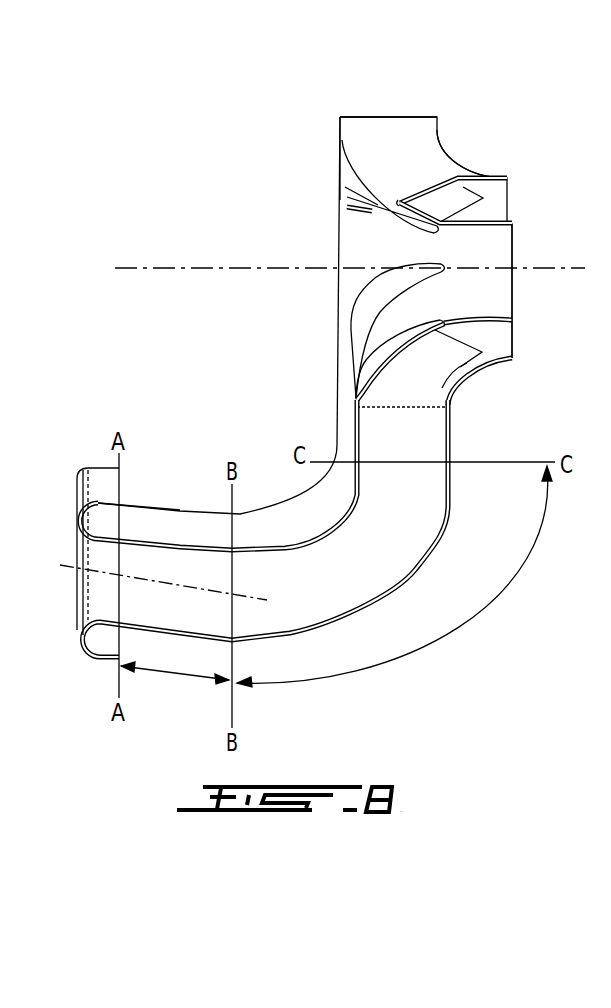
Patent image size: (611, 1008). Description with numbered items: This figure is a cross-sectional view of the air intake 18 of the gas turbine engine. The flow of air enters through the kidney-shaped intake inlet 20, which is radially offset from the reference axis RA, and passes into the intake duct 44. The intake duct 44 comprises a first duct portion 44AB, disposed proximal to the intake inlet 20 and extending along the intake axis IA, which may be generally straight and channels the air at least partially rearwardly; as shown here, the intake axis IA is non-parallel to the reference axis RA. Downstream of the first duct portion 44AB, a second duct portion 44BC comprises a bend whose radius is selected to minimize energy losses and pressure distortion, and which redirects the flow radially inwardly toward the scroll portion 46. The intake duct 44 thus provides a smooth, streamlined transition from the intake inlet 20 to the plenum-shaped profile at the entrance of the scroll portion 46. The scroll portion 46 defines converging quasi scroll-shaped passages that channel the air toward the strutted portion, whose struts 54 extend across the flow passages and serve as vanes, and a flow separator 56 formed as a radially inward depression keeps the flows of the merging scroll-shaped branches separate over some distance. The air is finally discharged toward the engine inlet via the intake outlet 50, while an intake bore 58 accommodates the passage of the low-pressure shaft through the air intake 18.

The air intake 18 is at (277, 137).
The intake inlet 20 is at (95, 603).
The intake duct 44 is at (174, 530).
The first duct portion 44AB is at (193, 621).
The second duct portion 44BC is at (340, 583).
The scroll portion 46 is at (399, 281).
The intake outlet 50 is at (493, 203).
The struts 54 is at (347, 197).
The flow separator 56 is at (425, 162).
The intake bore 58 is at (497, 248).
The reference axis RA is at (190, 268).
The intake axis IA is at (252, 602).